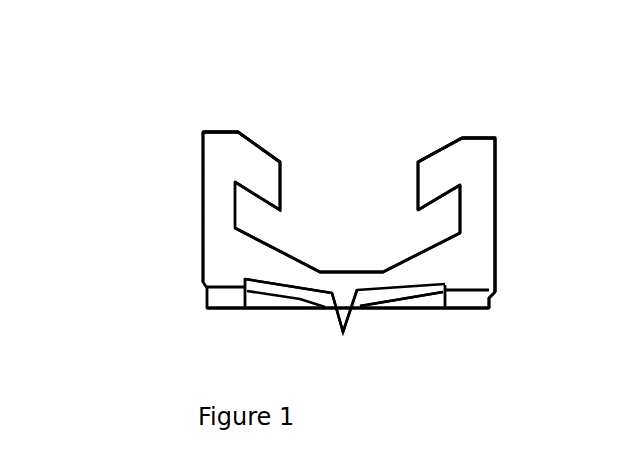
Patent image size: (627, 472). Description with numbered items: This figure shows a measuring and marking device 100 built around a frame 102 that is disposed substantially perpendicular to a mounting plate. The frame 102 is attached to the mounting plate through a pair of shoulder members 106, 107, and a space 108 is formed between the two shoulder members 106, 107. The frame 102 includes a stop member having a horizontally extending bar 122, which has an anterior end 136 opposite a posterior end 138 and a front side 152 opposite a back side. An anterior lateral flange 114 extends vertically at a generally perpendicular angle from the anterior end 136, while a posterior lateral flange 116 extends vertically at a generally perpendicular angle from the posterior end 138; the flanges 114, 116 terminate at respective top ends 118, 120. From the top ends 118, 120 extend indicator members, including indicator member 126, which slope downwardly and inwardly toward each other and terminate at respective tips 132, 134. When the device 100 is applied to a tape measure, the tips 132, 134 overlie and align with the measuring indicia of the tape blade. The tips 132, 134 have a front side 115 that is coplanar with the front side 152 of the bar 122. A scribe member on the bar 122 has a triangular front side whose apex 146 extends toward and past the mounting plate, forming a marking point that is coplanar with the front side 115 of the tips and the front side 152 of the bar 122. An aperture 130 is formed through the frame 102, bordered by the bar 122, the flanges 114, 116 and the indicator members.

The measuring and marking device 100 is at (533, 106).
The frame 102 is at (541, 226).
The shoulder member 106 is at (228, 290).
The shoulder member 107 is at (477, 313).
The space 108 is at (435, 290).
The anterior lateral flange 114 is at (217, 185).
The front side 115 is at (497, 163).
The posterior lateral flange 116 is at (485, 199).
The top end 118 is at (217, 132).
The top end 120 is at (498, 134).
The horizontally extending bar 122 is at (318, 282).
The indicator member 126 is at (438, 160).
The aperture 130 is at (317, 253).
The tip 132 is at (246, 217).
The tip 134 is at (418, 211).
The anterior end 136 is at (217, 274).
The posterior end 138 is at (482, 271).
The apex 146 is at (343, 332).
The front side 152 is at (445, 270).